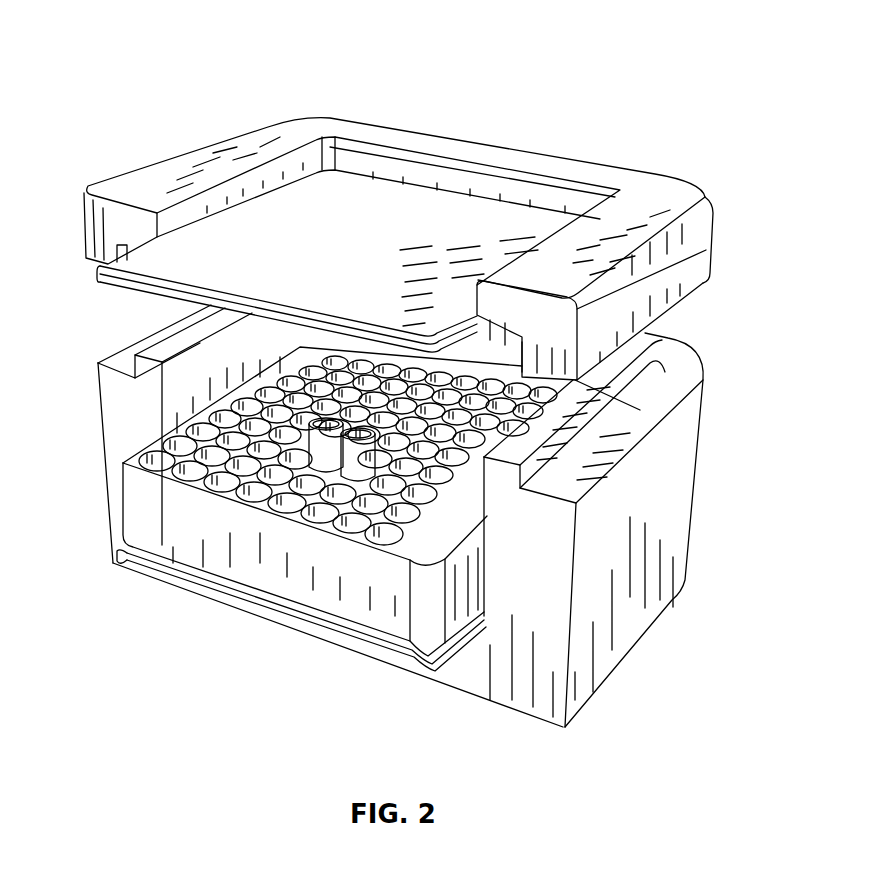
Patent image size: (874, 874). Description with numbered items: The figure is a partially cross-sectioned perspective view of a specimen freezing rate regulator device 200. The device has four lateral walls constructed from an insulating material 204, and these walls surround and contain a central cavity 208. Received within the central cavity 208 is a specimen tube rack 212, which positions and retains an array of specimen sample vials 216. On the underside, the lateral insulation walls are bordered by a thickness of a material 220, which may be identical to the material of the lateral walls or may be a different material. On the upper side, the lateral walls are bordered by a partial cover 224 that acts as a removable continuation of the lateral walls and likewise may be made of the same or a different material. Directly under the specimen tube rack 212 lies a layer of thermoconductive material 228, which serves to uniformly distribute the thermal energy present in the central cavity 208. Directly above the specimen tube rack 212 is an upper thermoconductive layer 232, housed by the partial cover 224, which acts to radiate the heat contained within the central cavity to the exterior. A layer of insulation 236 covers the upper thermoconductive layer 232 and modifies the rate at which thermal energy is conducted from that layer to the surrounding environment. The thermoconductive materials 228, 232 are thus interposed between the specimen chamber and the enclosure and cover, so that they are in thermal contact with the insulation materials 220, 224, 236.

The specimen freezing rate regulator device 200 is at (155, 60).
The insulating material 204 is at (430, 521).
The central cavity 208 is at (580, 384).
The specimen tube rack 212 is at (304, 509).
The specimen sample vials 216 is at (124, 547).
The material bordering the underside of the lateral walls 220 is at (500, 687).
The partial cover 224 is at (398, 227).
The layer of thermoconductive material 228 is at (222, 587).
The upper thermoconductive layer 232 is at (150, 289).
The layer of insulation 236 is at (366, 218).